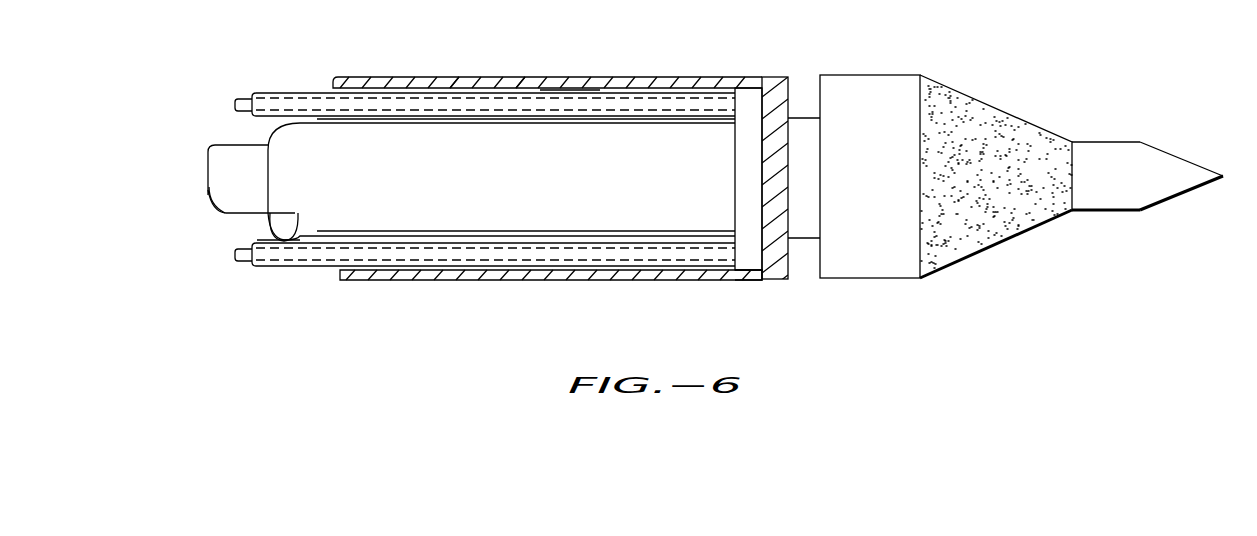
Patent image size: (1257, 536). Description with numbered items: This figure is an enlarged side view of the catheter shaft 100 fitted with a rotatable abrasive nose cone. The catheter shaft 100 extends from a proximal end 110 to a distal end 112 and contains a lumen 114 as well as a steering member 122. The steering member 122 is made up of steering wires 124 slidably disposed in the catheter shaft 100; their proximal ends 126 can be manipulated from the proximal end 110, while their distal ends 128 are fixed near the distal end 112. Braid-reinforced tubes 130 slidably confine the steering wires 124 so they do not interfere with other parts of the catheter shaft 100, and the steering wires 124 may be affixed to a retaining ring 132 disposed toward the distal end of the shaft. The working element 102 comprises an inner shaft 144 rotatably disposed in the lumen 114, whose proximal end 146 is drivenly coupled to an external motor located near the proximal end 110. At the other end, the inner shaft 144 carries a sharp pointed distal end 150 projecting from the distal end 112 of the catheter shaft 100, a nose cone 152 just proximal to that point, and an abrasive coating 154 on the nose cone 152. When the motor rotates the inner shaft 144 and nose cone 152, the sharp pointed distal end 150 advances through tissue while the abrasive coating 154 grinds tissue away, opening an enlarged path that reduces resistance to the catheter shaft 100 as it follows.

The catheter shaft 100 is at (528, 281).
The working element 102 is at (813, 117).
The proximal end 110 is at (336, 77).
The distal end 112 is at (787, 77).
The lumen 114 is at (287, 220).
The steering member 122 is at (457, 74).
The steering wires 124 is at (527, 74).
The proximal ends 126 is at (237, 99).
The distal ends 128 is at (735, 87).
The braid-reinforced tubes 130 is at (568, 89).
The retaining ring 132 is at (753, 281).
The inner shaft 144 is at (233, 216).
The proximal end 146 is at (210, 192).
The sharp pointed distal end 150 is at (1225, 178).
The nose cone 152 is at (1043, 224).
The abrasive coating 154 is at (1002, 132).